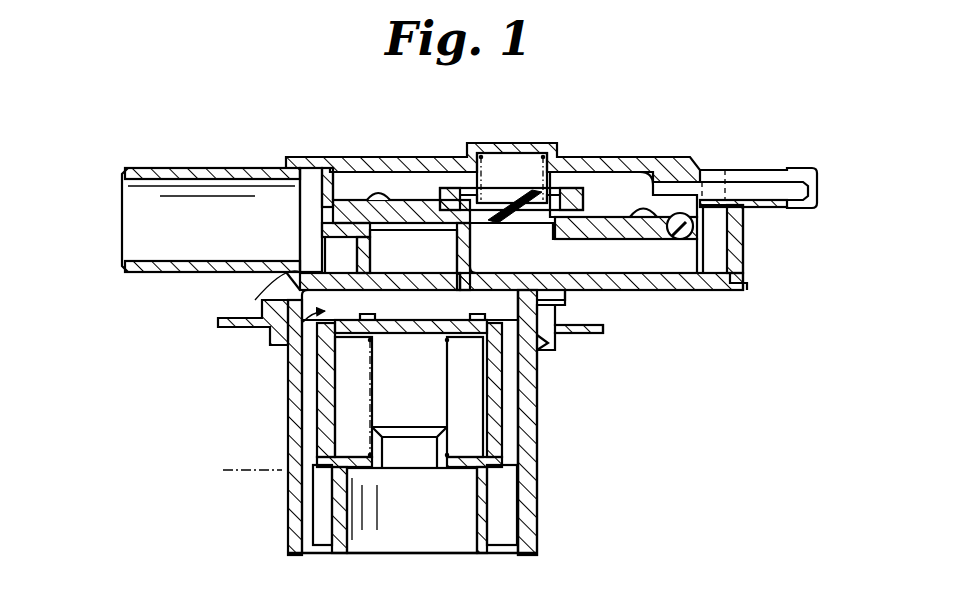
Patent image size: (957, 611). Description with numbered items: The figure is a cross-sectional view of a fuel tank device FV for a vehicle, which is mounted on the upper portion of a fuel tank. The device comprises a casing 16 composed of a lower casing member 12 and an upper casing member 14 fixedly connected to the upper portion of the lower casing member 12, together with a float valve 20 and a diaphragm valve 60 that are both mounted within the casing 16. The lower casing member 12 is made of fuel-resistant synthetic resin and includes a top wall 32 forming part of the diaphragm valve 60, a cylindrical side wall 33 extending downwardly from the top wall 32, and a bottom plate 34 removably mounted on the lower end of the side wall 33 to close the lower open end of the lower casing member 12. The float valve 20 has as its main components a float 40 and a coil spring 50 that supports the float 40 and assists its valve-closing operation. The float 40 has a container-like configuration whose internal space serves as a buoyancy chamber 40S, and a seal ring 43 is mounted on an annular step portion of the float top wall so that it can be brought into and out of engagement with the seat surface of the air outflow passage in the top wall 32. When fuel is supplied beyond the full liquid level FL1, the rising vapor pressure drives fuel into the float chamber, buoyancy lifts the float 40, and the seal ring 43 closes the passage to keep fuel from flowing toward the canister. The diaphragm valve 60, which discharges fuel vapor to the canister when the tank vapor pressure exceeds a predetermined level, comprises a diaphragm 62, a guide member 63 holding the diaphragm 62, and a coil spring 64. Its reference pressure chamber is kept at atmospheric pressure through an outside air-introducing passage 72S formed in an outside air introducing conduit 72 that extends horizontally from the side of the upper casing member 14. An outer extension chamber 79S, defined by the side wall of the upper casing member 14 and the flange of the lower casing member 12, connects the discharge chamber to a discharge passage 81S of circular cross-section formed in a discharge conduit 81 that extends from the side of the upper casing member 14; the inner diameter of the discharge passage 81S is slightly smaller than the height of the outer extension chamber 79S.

The lower casing member 12 is at (539, 437).
The upper casing member 14 is at (742, 252).
The casing 16 is at (543, 400).
The float valve 20 is at (290, 352).
The top wall 32 is at (278, 282).
The side wall 33 is at (288, 424).
The bottom plate 34 is at (350, 542).
The float 40 is at (310, 394).
The buoyancy chamber 40S is at (430, 392).
The seal ring 43 is at (456, 313).
The coil spring 50 is at (445, 381).
The diaphragm valve 60 is at (618, 178).
The diaphragm 62 is at (521, 200).
The guide member 63 is at (462, 205).
The coil spring 64 is at (492, 150).
The outside air introducing conduit 72 is at (742, 168).
The outside air-introducing passage 72S is at (770, 185).
The outer extension chamber 79S is at (318, 178).
The discharge conduit 81 is at (220, 166).
The discharge passage 81S is at (153, 192).
The fuel tank device FV is at (604, 136).
The full liquid level FL1 is at (232, 473).